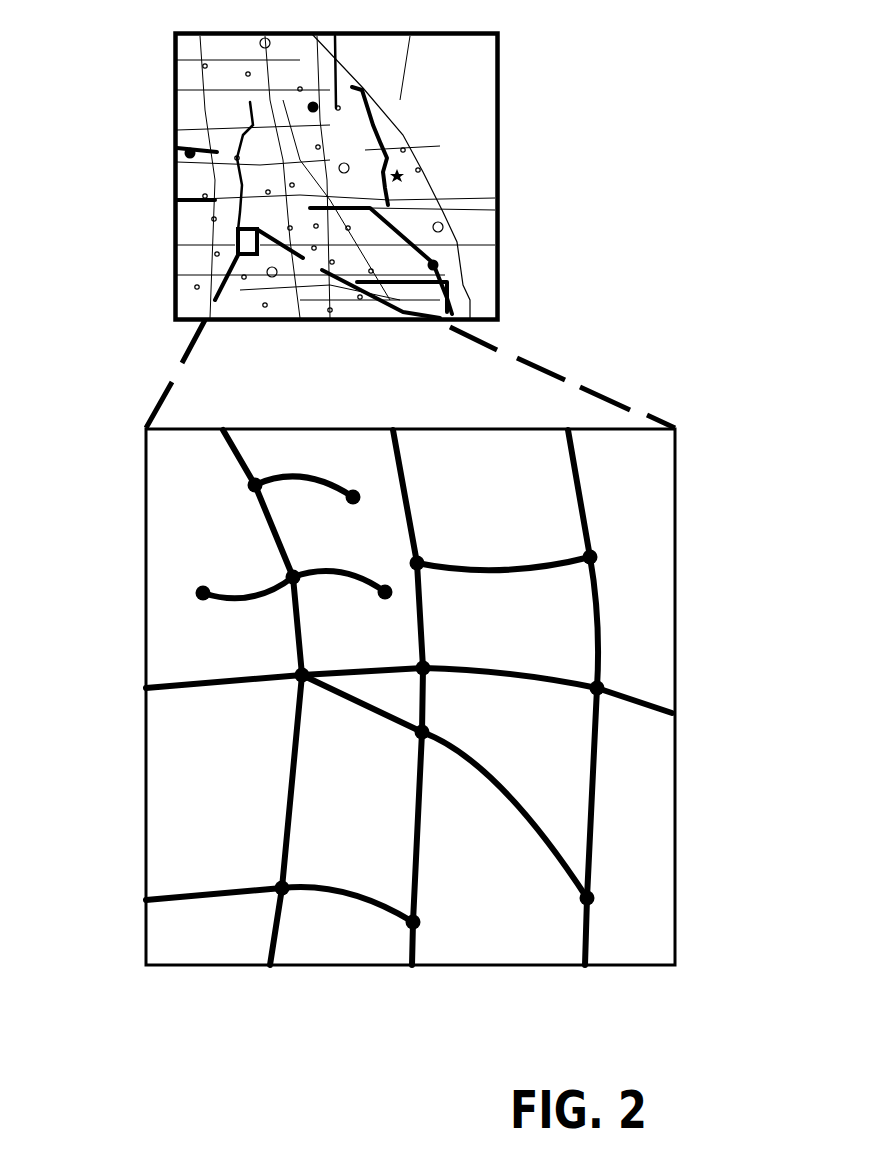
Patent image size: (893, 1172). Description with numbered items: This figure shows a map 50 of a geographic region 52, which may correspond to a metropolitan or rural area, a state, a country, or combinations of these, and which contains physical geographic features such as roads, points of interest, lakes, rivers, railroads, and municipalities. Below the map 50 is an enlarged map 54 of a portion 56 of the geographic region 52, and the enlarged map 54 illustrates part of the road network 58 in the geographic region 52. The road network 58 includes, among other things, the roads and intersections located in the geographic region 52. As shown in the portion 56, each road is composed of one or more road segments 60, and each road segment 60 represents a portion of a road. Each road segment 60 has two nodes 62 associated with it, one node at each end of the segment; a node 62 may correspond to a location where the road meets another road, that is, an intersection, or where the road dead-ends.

The map 50 is at (165, 200).
The geographic region 52 is at (453, 69).
The enlarged map 54 is at (684, 491).
The portion 56 is at (510, 937).
The road network 58 is at (230, 704).
The road segment 60 is at (237, 608).
The node 62 is at (210, 569).